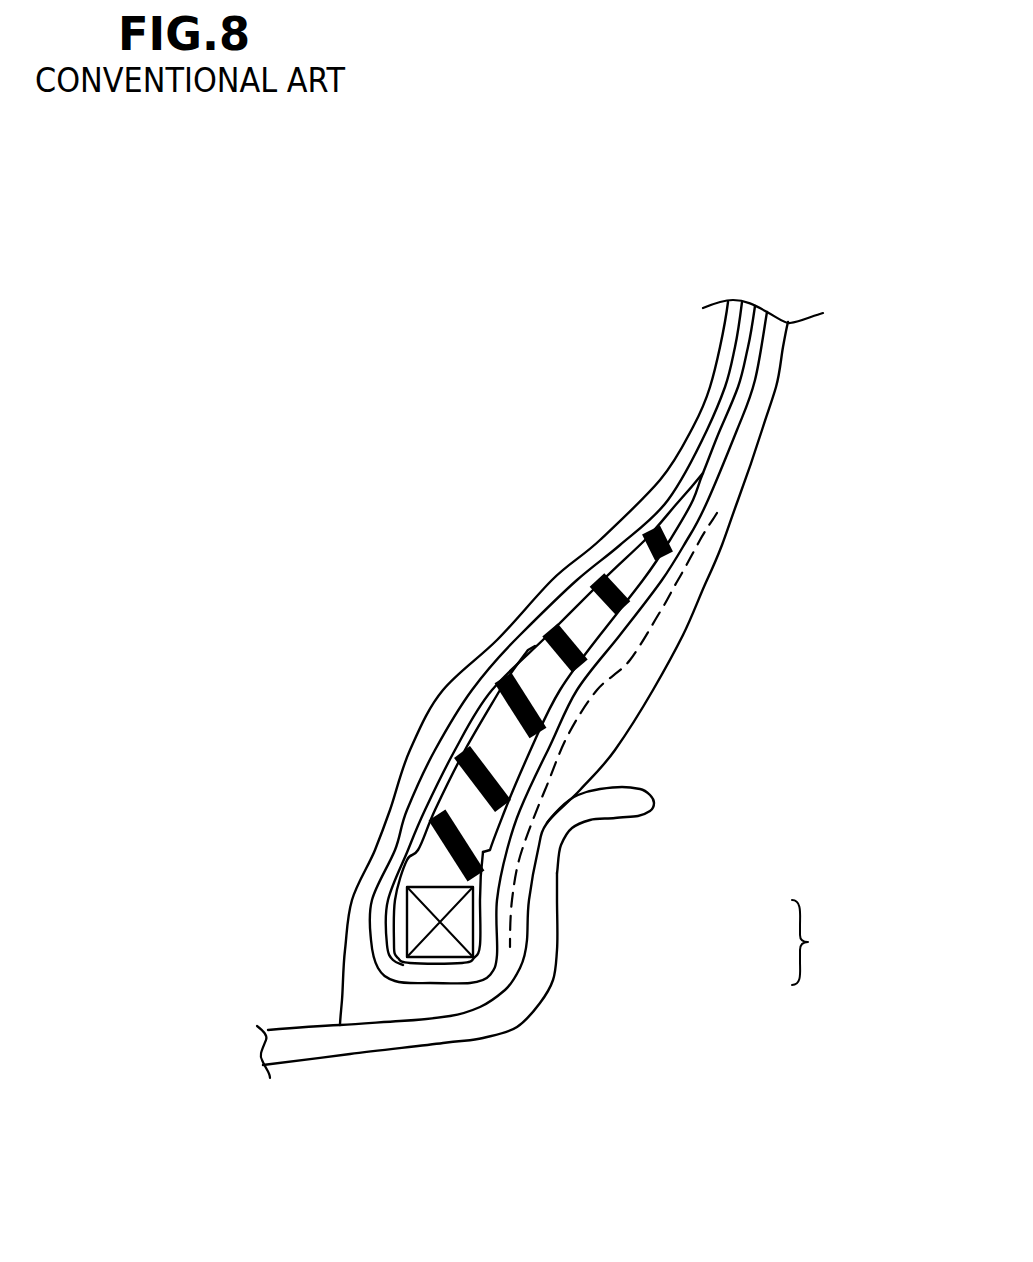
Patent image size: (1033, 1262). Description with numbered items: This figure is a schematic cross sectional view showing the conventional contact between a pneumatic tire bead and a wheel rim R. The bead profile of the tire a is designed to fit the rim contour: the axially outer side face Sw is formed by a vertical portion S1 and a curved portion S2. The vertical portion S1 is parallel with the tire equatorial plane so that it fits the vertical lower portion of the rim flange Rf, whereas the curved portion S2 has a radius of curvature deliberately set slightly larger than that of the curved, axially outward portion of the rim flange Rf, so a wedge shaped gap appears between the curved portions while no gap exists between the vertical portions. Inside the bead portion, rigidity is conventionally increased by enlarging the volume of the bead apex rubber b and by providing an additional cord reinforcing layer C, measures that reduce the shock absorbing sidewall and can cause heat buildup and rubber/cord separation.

The pneumatic tire (conventional) a is at (364, 801).
The bead apex rubber b is at (497, 727).
The additional cord reinforcing layer C is at (656, 604).
The rim flange Rf is at (648, 799).
The curved portion S2 is at (583, 787).
The vertical portion S1 is at (532, 917).
The axially outer side face Sw is at (830, 942).
The rim R is at (443, 1028).